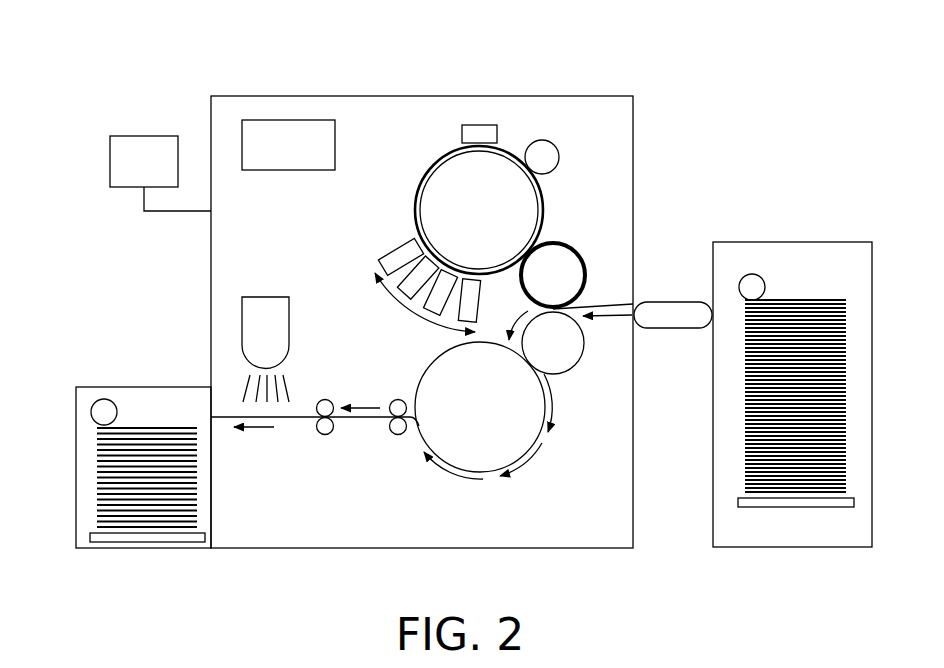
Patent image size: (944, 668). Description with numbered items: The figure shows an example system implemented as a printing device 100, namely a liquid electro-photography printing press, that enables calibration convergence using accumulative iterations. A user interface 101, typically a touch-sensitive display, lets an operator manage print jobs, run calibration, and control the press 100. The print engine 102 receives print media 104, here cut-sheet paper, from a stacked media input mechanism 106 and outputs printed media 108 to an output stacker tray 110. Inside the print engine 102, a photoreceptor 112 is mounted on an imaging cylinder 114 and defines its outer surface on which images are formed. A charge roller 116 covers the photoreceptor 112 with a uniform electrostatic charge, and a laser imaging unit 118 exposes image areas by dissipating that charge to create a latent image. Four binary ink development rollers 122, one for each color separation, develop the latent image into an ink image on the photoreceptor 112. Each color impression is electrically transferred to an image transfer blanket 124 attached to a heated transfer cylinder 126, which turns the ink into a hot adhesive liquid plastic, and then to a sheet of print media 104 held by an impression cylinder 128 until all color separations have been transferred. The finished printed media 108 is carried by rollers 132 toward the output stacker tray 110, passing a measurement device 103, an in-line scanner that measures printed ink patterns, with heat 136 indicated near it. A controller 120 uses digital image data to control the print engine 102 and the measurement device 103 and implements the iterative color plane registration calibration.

The printing device 100 is at (197, 67).
The user interface 101 is at (160, 173).
The print engine 102 is at (565, 96).
The measurement device 103 is at (265, 333).
The print media 104 is at (610, 303).
The media input mechanism 106 is at (802, 241).
The printed media 108 is at (92, 428).
The output stacker tray 110 is at (84, 387).
The photoreceptor 112 is at (416, 200).
The imaging cylinder 114 is at (479, 210).
The charge roller 116 is at (557, 148).
The laser imaging unit 118 is at (497, 125).
The controller 120 is at (288, 145).
The binary ink development roller 122 is at (421, 307).
The image transfer blanket 124 is at (578, 252).
The transfer cylinder 126 is at (553, 275).
The impression cylinder 128 is at (546, 342).
The rollers 132 is at (375, 465).
The heat 136 is at (231, 378).